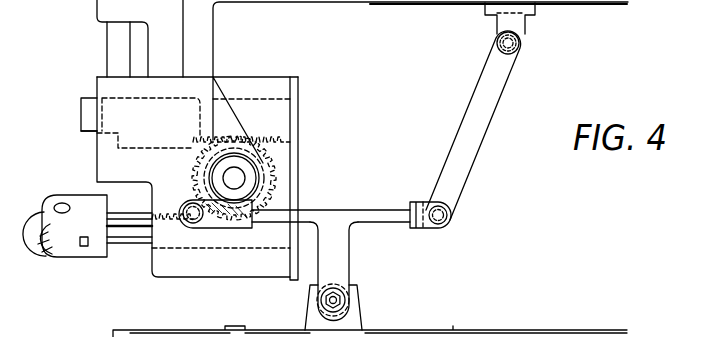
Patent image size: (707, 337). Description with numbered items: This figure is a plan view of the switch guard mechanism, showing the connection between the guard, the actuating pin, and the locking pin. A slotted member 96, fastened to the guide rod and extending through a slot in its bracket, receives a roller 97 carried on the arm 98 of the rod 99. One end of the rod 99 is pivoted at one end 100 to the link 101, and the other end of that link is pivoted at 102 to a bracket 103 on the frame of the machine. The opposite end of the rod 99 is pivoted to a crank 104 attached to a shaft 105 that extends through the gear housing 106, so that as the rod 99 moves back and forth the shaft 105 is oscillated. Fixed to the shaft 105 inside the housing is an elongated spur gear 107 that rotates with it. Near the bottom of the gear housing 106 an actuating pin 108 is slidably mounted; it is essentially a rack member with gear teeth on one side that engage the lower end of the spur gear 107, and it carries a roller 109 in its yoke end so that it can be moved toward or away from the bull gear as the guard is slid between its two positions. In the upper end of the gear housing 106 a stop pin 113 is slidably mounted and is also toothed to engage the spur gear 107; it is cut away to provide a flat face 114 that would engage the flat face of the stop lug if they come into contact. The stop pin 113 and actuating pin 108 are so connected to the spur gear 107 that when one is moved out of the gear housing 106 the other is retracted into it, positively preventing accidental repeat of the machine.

The slotted member 96 is at (357, 293).
The roller 97 is at (347, 312).
The arm 98 is at (343, 257).
The rod 99 is at (378, 209).
The pivot end 100 is at (452, 213).
The link 101 is at (486, 128).
The pivot 102 is at (521, 47).
The bracket 103 is at (518, 25).
The crank 104 is at (195, 177).
The shaft 105 is at (243, 183).
The gear housing 106 is at (280, 115).
The elongated spur gear 107 is at (257, 157).
The actuating pin 108 is at (132, 252).
The roller 109 is at (62, 248).
The stop pin 113 is at (90, 107).
The flat face 114 is at (86, 133).